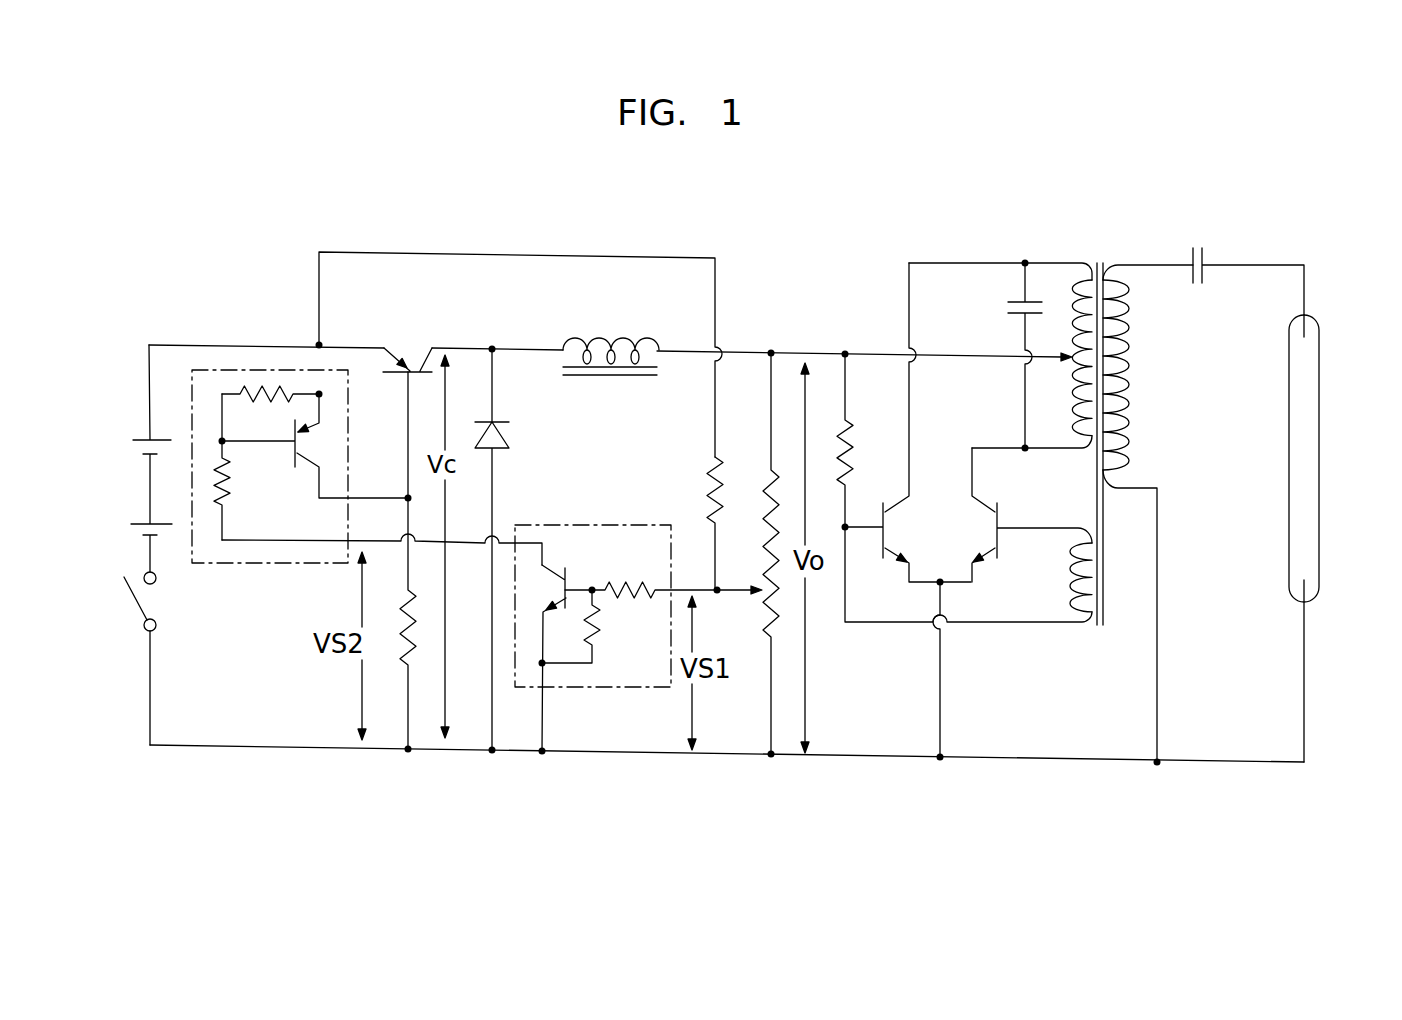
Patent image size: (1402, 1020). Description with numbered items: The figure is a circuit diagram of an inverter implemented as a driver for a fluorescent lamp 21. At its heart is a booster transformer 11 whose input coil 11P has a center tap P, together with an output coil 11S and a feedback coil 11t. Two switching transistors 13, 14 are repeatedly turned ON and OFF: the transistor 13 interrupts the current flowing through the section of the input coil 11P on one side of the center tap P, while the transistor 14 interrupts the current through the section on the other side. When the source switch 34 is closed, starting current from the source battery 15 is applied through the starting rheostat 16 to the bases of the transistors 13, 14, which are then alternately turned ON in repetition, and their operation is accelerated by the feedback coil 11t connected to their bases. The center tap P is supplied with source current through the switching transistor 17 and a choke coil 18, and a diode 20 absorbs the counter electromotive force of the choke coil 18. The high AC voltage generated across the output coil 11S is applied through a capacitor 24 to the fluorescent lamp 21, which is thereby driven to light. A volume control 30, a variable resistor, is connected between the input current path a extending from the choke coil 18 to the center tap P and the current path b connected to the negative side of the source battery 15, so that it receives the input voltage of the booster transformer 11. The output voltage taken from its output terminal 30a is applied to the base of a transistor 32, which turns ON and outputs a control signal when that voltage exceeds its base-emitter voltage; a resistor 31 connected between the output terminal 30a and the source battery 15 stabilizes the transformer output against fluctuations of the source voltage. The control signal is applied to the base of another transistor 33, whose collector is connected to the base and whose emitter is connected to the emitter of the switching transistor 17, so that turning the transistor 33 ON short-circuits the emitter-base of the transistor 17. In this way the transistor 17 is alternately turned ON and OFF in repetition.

The booster transformer 11 is at (1099, 262).
The input coil 11P is at (1070, 303).
The output coil 11S is at (1134, 368).
The feedback coil 11t is at (1069, 571).
The transistor 13 is at (890, 548).
The transistor 14 is at (999, 511).
The source battery 15 is at (152, 482).
The starting rheostat 16 is at (852, 448).
The switching transistor 17 is at (423, 348).
The choke coil 18 is at (604, 345).
The diode 20 is at (504, 440).
The fluorescent lamp 21 is at (1319, 393).
The capacitor 24 is at (1199, 248).
The volume control 30 is at (766, 498).
The output terminal 30a is at (740, 590).
The resistor 31 is at (712, 496).
The transistor 32 is at (566, 572).
The transistor 33 is at (293, 457).
The source switch 34 is at (148, 603).
The center tap P is at (1067, 360).
The input current path a is at (771, 351).
The current path b is at (773, 760).